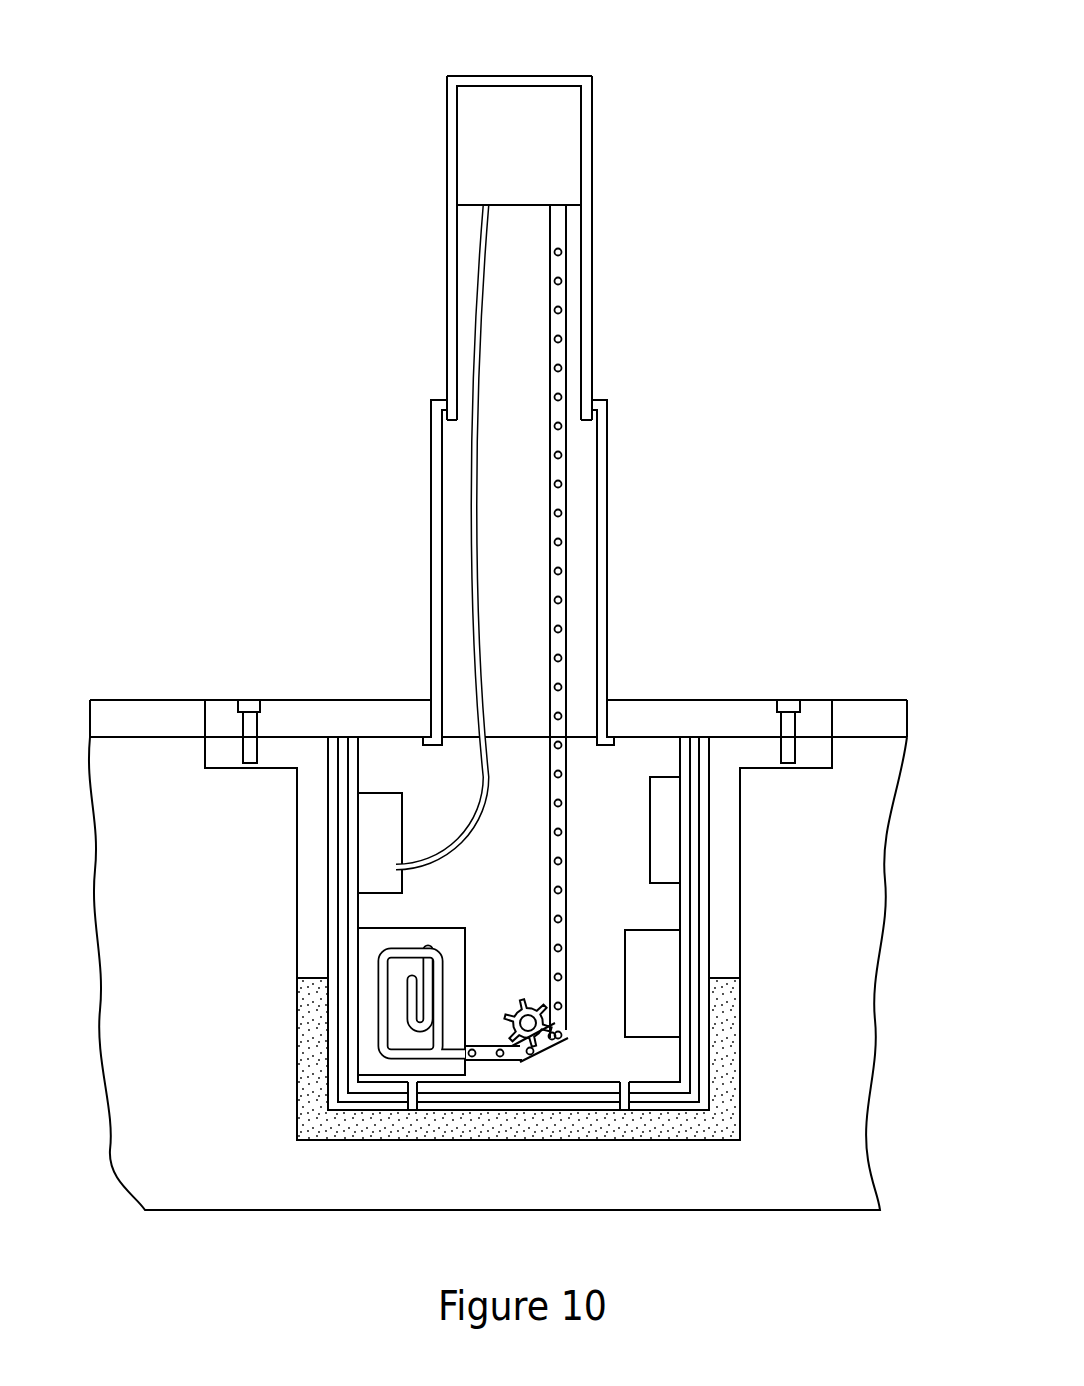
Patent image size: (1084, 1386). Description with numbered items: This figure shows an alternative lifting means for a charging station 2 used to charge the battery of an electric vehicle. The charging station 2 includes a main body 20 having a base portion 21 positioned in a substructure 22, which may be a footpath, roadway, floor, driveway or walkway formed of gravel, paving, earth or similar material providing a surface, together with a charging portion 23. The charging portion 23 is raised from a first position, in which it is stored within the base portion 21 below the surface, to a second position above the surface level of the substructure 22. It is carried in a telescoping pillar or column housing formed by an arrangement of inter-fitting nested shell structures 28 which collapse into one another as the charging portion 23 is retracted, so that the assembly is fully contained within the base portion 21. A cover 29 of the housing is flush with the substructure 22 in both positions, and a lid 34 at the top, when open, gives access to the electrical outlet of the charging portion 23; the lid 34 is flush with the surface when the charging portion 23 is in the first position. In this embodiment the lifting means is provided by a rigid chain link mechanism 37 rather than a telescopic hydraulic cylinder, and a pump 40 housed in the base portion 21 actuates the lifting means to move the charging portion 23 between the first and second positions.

The charging station 2 is at (533, 521).
The main body 20 is at (616, 902).
The base portion 21 is at (712, 824).
The substructure 22 is at (827, 1017).
The charging portion 23 is at (480, 135).
The inter-fitting nested shell structures 28 is at (590, 218).
The cover 29 is at (717, 698).
The lid 34 is at (536, 74).
The rigid chain link mechanism 37 is at (540, 1032).
The pump 40 is at (368, 828).